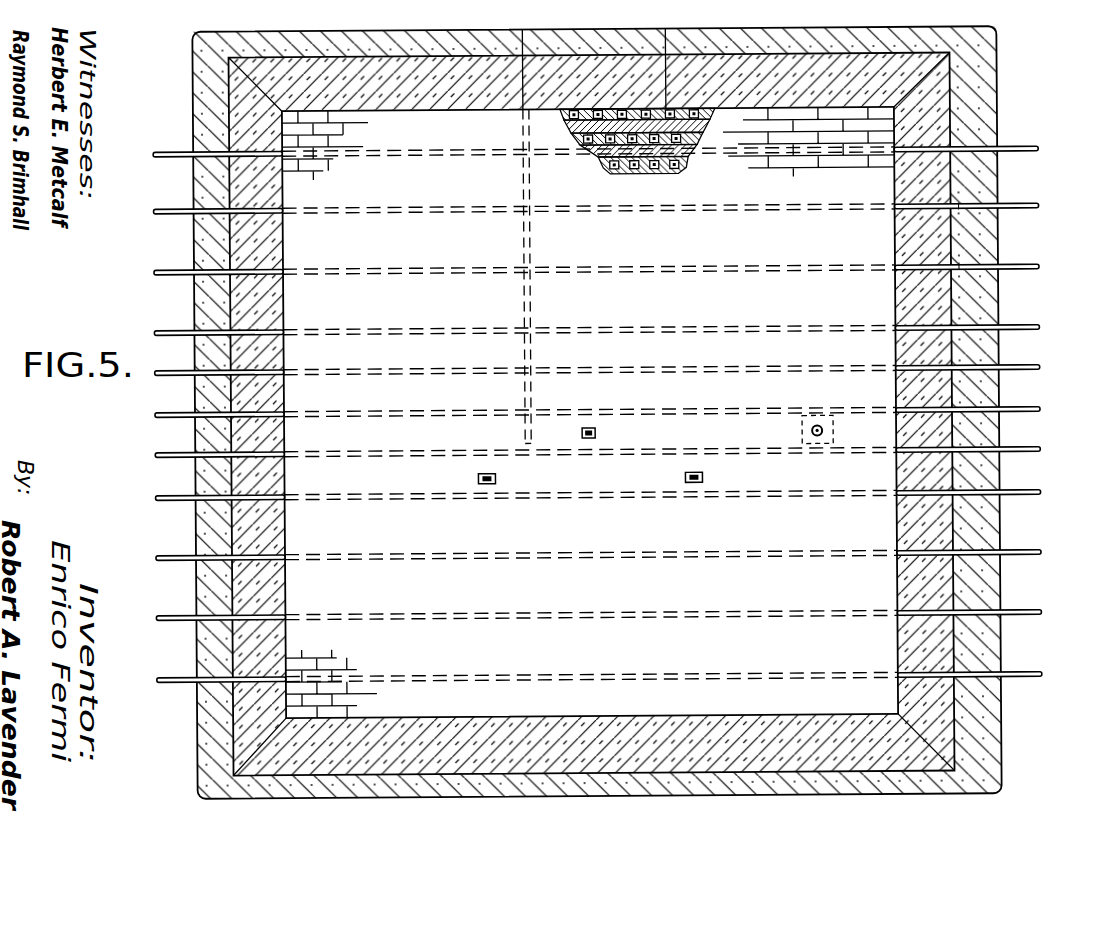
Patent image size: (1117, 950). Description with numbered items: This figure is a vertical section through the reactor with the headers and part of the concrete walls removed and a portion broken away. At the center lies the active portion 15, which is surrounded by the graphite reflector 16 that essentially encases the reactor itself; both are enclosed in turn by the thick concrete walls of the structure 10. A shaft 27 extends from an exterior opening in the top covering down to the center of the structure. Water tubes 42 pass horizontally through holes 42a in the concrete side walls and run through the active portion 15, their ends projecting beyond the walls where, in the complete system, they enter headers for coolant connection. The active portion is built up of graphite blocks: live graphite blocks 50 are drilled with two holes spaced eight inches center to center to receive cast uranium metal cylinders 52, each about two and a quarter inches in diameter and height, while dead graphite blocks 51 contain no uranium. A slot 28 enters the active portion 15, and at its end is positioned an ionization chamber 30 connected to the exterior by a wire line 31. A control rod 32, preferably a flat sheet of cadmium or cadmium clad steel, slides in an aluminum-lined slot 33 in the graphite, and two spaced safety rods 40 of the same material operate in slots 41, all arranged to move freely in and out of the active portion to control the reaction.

The outer concrete shield wall 10 is at (978, 130).
The graphite reflector 16 is at (928, 116).
The active portion 15 is at (330, 302).
The water tubes 42 is at (1022, 152).
The holes 42a is at (1000, 258).
The shaft 27 is at (521, 180).
The live graphite blocks 50 is at (720, 114).
The dead graphite blocks 51 is at (570, 127).
The uranium cylinders 52 is at (563, 112).
The control rod 32 is at (596, 434).
The aluminum-lined slot 33 is at (590, 429).
The slot 28 is at (813, 430).
The wire line 31 is at (813, 434).
The ionization chamber 30 is at (834, 432).
The safety rods 40 is at (478, 479).
The slots 41 is at (484, 474).